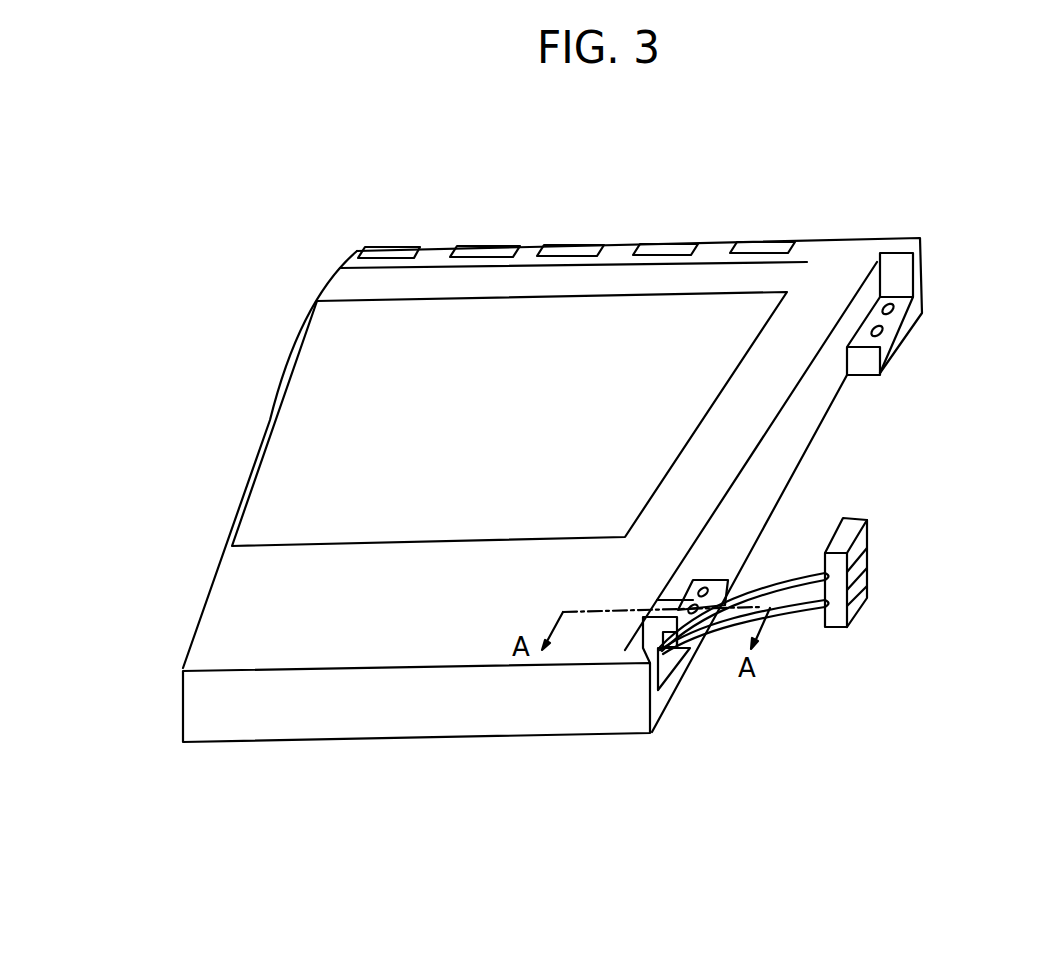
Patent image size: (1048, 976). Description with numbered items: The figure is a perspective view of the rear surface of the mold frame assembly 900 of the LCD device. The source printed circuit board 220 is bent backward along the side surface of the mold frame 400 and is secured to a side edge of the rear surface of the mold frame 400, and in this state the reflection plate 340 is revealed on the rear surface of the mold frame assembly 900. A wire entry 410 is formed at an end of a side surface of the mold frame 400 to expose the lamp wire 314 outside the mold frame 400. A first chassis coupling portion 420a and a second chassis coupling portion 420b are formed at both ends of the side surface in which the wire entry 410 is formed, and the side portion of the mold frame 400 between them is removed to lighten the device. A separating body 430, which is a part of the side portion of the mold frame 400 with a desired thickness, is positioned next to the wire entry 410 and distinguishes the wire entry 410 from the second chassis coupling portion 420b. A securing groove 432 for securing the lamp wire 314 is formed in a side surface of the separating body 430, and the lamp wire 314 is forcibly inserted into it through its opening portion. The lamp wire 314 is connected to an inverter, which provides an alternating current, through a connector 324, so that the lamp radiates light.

The mold frame assembly 900 is at (857, 196).
The source printed circuit board 220 is at (355, 250).
The reflection plate 340 is at (270, 414).
The mold frame 400 is at (797, 443).
The first chassis coupling portion 420a is at (897, 320).
The second chassis coupling portion 420b is at (722, 583).
The wire entry 410 is at (643, 632).
The securing groove 432 is at (672, 655).
The separating body 430 is at (677, 650).
The lamp wire 314 is at (797, 612).
The connector 324 is at (860, 600).